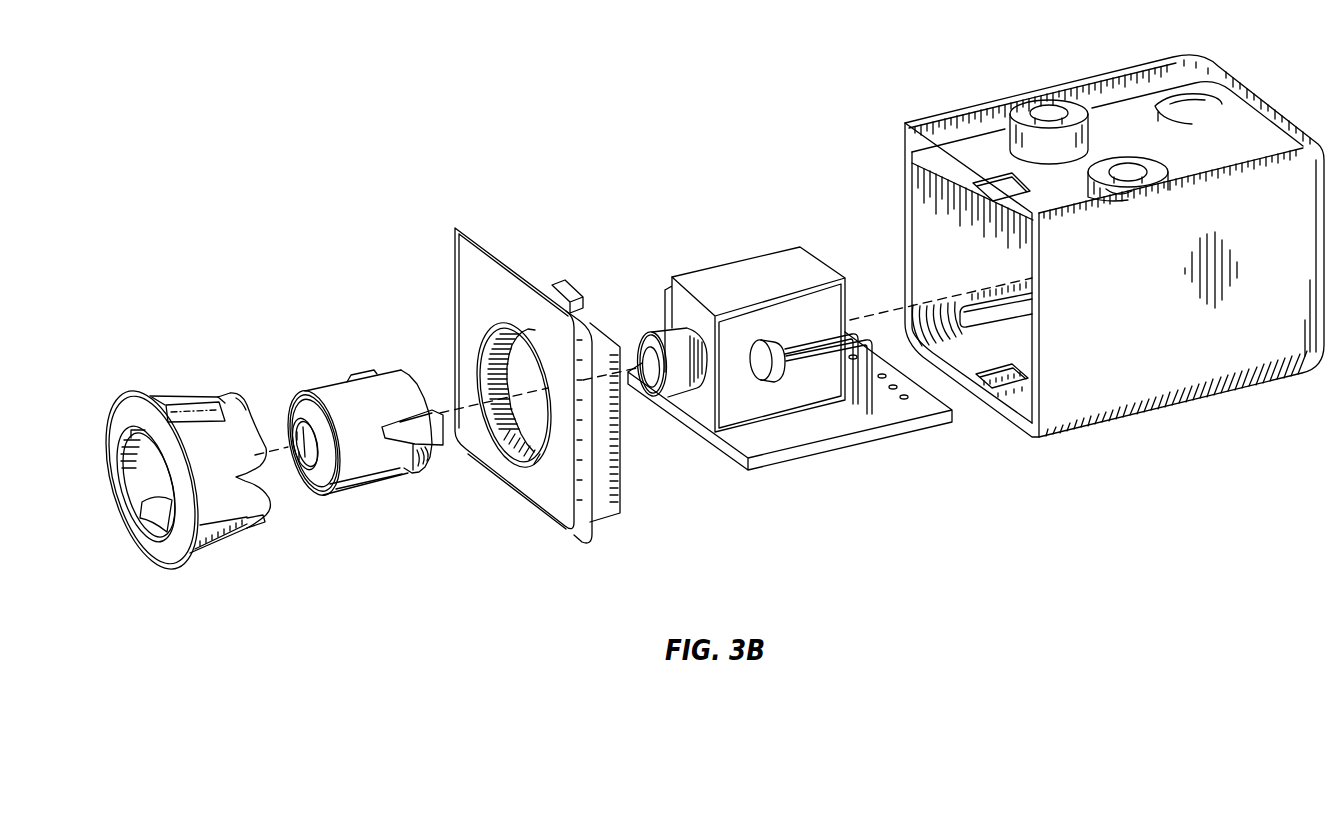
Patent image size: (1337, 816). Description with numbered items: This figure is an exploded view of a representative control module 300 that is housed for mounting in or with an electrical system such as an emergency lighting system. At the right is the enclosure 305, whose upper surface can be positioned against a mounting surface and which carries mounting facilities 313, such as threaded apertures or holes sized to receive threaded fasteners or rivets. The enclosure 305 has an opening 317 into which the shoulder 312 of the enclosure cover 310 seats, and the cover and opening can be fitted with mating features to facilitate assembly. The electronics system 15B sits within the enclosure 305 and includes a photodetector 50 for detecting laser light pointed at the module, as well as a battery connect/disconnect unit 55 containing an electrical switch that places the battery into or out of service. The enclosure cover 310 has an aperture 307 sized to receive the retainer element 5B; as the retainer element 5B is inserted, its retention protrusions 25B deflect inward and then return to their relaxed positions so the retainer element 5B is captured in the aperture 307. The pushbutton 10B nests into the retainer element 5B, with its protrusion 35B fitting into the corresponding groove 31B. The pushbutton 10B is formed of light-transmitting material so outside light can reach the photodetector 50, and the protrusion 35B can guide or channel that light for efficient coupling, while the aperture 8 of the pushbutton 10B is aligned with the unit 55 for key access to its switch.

The control module 300 is at (197, 121).
The retainer element 5B is at (201, 457).
The retention protrusions 25B is at (187, 397).
The groove 31B is at (266, 505).
The pushbutton 10B is at (358, 413).
The aperture 8 is at (306, 444).
The protrusion 35B is at (393, 478).
The enclosure cover 310 is at (514, 403).
The aperture 307 is at (522, 425).
The shoulder 312 is at (606, 503).
The electronics system 15B is at (776, 359).
The battery connect/disconnect unit 55 is at (758, 272).
The photodetector 50 is at (762, 365).
The enclosure 305 is at (1084, 258).
The mounting facilities 313 is at (1128, 172).
The opening 317 is at (1018, 395).